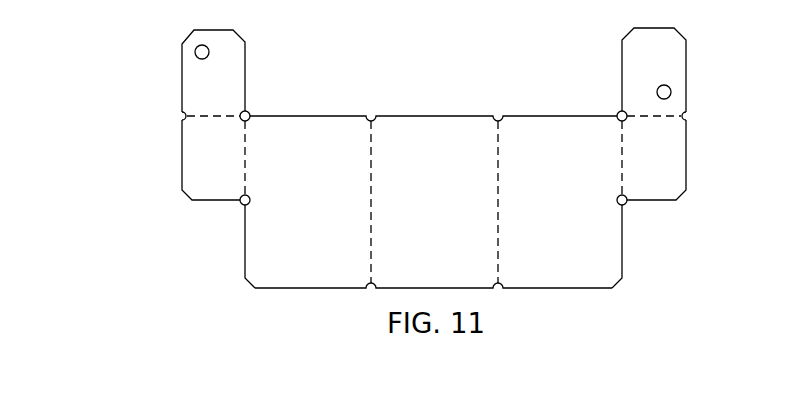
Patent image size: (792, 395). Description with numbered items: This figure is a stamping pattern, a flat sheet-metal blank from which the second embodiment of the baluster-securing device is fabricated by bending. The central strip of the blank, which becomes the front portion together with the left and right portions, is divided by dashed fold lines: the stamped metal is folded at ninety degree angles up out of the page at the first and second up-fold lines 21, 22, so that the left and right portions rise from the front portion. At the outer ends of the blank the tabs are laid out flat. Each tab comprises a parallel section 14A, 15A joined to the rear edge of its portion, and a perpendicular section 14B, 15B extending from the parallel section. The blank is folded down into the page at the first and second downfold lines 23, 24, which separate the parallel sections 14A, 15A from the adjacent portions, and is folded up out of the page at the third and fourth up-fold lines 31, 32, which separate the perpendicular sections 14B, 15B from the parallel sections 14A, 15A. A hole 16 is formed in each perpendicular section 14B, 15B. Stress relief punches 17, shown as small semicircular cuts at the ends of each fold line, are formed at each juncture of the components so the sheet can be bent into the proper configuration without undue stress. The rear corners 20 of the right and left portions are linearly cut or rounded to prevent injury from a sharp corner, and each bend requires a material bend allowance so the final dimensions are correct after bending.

The rear corners 20 is at (247, 287).
The first up-fold line 21 is at (499, 208).
The second up-fold line 22 is at (372, 150).
The first downfold line 23 is at (621, 147).
The second downfold line 24 is at (247, 148).
The parallel section 14A is at (215, 195).
The perpendicular section 14B is at (193, 70).
The parallel section 15A is at (677, 168).
The perpendicular section 15B is at (672, 48).
The hole 16 is at (211, 56).
The stress relief punches 17 is at (496, 112).
The third up-fold line 31 is at (653, 116).
The fourth up-fold line 32 is at (213, 117).